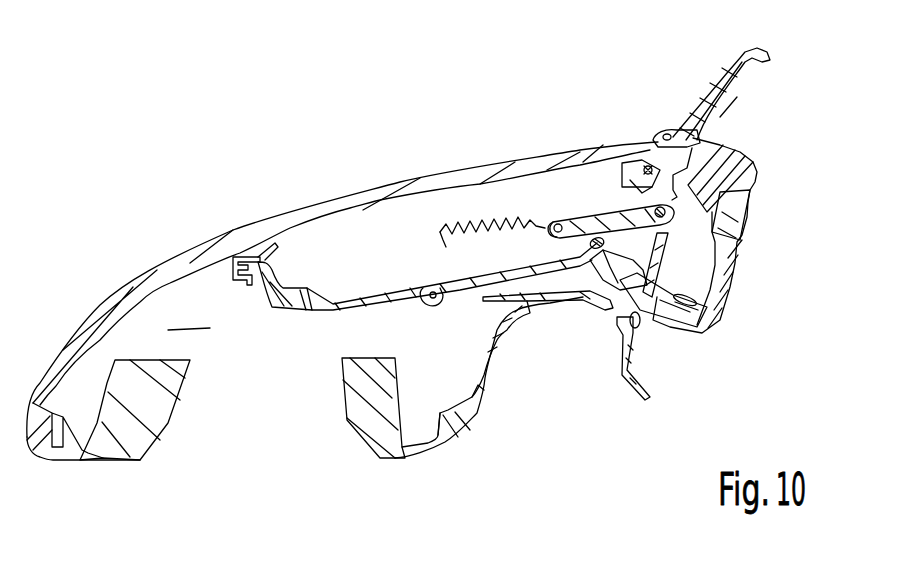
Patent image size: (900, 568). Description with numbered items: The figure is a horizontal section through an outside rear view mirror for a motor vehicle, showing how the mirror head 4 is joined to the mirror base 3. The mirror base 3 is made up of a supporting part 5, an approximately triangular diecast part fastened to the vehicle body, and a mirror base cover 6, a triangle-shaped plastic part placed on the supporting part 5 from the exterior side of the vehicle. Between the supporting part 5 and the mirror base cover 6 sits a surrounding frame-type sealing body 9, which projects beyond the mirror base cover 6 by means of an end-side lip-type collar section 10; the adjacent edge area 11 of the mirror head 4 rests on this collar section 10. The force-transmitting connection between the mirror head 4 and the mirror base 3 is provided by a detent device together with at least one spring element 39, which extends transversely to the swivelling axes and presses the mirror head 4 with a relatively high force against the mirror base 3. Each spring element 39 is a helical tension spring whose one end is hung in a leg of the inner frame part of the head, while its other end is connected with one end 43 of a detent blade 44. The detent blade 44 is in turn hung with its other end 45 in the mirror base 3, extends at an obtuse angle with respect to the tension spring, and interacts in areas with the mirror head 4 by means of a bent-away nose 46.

The mirror base 3 is at (751, 217).
The mirror head 4 is at (172, 250).
The supporting part 5 is at (743, 173).
The mirror base cover 6 is at (723, 90).
The sealing body 9 is at (737, 95).
The collar section 10 is at (673, 133).
The edge area 11 is at (654, 133).
The spring element 39 is at (472, 223).
The end of detent blade 43 is at (556, 215).
The detent blade 44 is at (623, 213).
The other end of detent blade 45 is at (675, 228).
The bent-away nose 46 is at (590, 245).